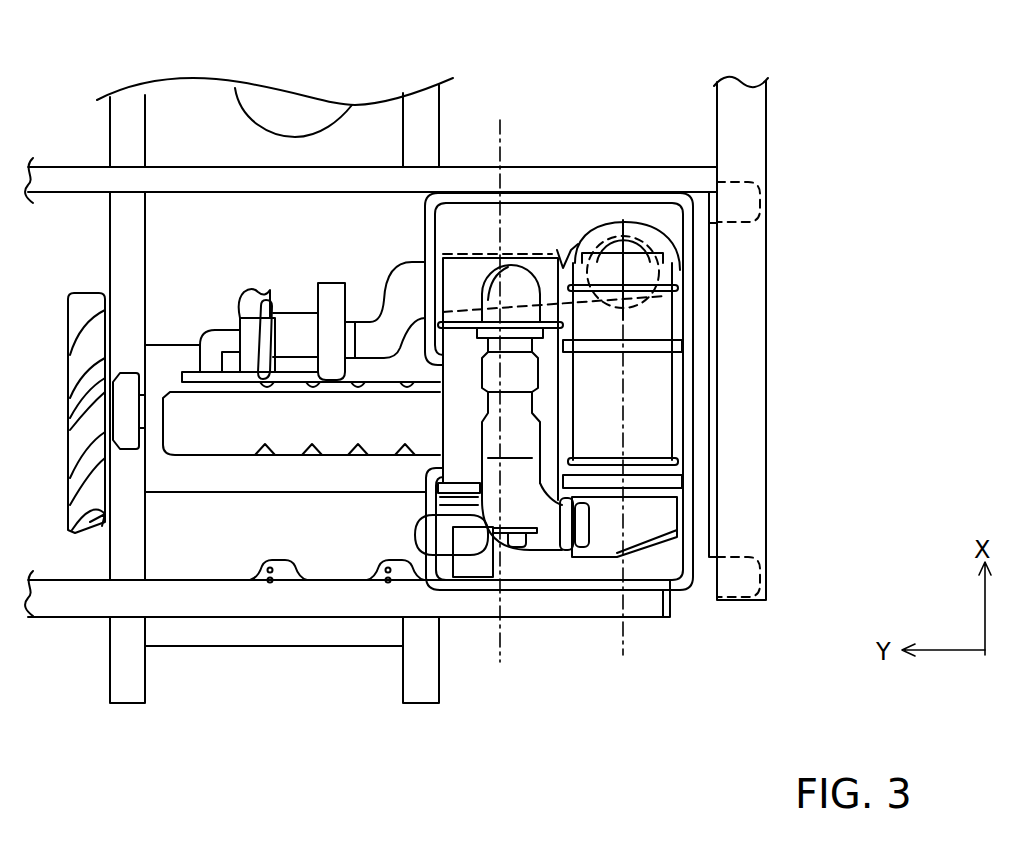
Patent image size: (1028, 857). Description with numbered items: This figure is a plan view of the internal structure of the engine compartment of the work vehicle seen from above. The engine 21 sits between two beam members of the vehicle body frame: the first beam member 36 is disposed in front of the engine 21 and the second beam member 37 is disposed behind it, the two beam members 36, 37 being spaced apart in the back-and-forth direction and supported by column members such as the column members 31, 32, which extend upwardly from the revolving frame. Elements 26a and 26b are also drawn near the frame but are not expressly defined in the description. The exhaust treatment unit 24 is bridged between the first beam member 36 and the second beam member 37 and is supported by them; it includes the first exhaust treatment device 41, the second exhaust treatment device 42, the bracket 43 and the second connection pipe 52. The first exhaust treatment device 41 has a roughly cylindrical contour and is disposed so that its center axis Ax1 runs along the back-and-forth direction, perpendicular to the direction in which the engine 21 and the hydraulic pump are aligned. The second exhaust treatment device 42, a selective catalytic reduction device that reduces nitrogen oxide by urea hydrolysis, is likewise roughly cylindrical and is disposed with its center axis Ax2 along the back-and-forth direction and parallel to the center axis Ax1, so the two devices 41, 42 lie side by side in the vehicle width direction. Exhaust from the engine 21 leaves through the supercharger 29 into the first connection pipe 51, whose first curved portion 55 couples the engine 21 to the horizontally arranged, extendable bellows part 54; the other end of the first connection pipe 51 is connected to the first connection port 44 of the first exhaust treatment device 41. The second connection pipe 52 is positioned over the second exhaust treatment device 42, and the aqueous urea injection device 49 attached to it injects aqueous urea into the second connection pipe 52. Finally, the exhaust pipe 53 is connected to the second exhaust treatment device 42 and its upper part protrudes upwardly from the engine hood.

The engine 21 is at (276, 504).
The exhaust treatment unit 24 is at (553, 207).
The engine hood portion 26a is at (127, 115).
The engine hood portion 26b is at (418, 108).
The supercharger 29 is at (300, 343).
The column member 31 is at (762, 582).
The column member 32 is at (762, 203).
The first beam member 36 is at (190, 173).
The second beam member 37 is at (368, 585).
The first exhaust treatment device 41 is at (645, 527).
The second exhaust treatment device 42 is at (545, 413).
The bracket 43 is at (593, 210).
The first connection port 44 is at (645, 252).
The aqueous urea injection device 49 is at (523, 540).
The first connection pipe 51 is at (402, 250).
The second connection pipe 52 is at (527, 367).
The exhaust pipe 53 is at (468, 570).
The bellows part 54 is at (451, 258).
The first curved portion 55 is at (390, 248).
The center axis of first exhaust treatment device Ax1 is at (625, 633).
The center axis of second exhaust treatment device Ax2 is at (500, 640).